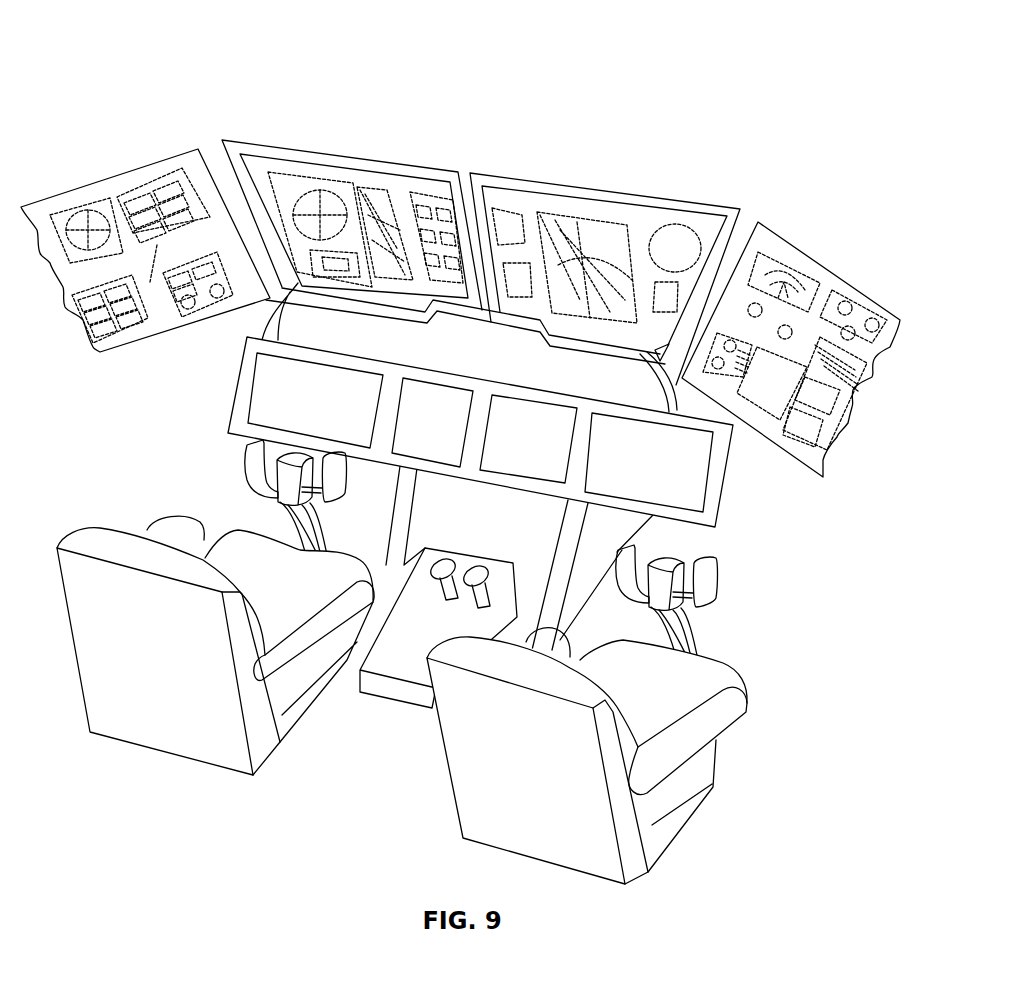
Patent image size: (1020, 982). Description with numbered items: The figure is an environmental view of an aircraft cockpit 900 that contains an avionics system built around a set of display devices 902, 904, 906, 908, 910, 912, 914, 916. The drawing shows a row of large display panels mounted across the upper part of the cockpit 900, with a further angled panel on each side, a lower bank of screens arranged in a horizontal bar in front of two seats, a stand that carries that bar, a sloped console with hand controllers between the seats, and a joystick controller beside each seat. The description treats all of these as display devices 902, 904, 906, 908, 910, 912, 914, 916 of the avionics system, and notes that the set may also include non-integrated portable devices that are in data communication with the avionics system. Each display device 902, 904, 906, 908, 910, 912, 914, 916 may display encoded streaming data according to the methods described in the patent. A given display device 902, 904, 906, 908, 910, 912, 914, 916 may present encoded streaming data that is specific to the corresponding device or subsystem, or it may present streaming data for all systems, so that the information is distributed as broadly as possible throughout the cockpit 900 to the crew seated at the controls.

The cockpit 900 is at (460, 448).
The display device 902 is at (252, 405).
The display device 904 is at (463, 403).
The display device 906 is at (573, 424).
The display device 908 is at (710, 480).
The display device 910 is at (408, 653).
The display device 912 is at (519, 558).
The display device 914 is at (280, 478).
The display device 916 is at (90, 337).